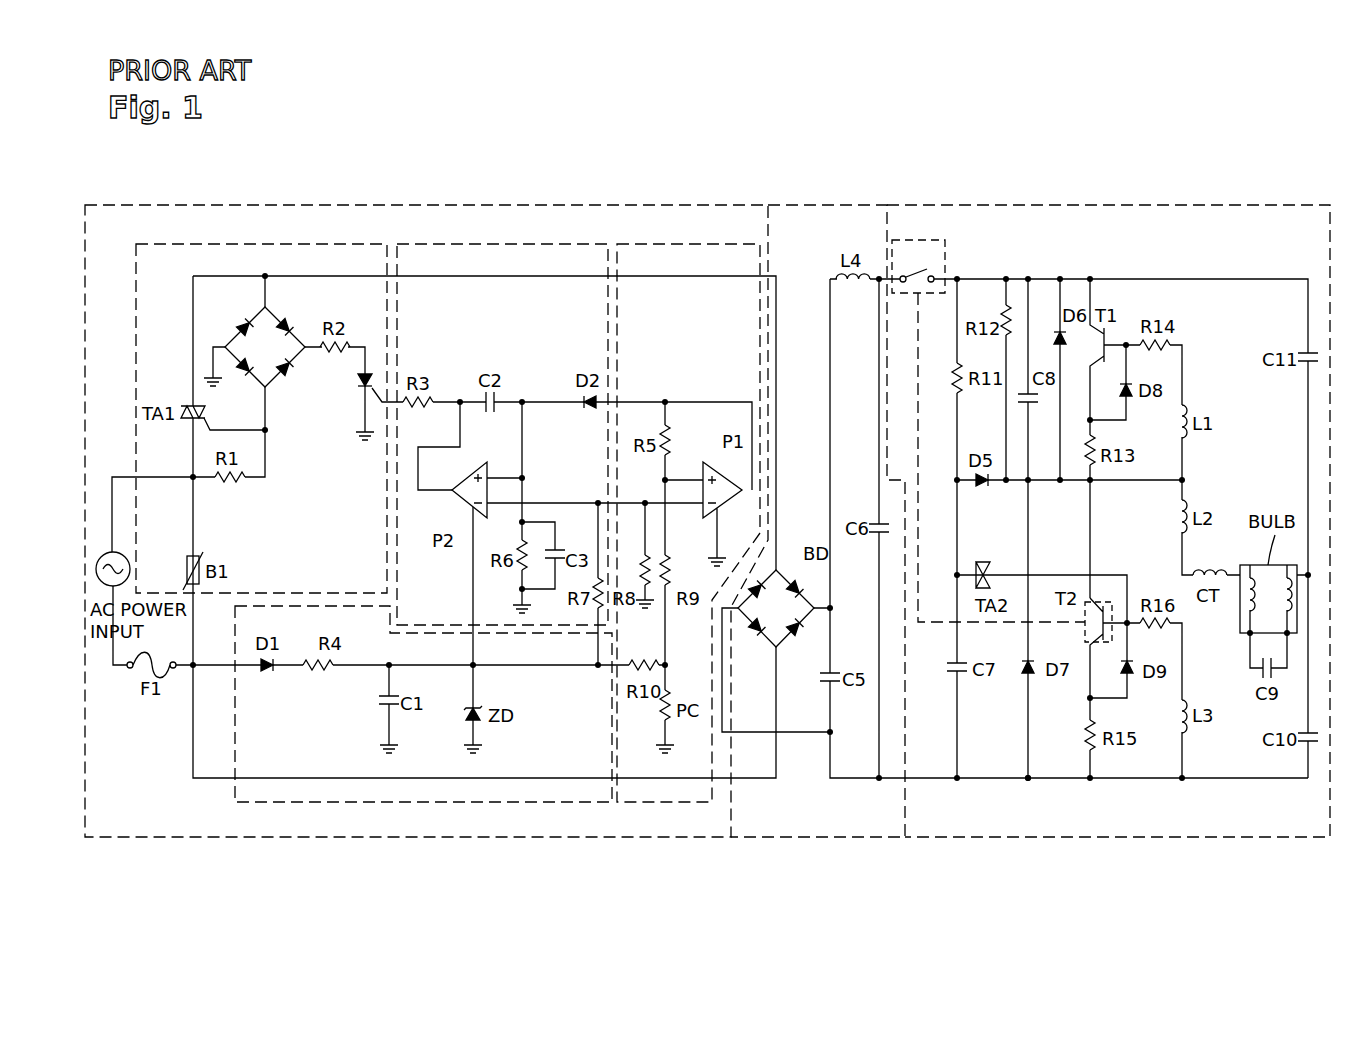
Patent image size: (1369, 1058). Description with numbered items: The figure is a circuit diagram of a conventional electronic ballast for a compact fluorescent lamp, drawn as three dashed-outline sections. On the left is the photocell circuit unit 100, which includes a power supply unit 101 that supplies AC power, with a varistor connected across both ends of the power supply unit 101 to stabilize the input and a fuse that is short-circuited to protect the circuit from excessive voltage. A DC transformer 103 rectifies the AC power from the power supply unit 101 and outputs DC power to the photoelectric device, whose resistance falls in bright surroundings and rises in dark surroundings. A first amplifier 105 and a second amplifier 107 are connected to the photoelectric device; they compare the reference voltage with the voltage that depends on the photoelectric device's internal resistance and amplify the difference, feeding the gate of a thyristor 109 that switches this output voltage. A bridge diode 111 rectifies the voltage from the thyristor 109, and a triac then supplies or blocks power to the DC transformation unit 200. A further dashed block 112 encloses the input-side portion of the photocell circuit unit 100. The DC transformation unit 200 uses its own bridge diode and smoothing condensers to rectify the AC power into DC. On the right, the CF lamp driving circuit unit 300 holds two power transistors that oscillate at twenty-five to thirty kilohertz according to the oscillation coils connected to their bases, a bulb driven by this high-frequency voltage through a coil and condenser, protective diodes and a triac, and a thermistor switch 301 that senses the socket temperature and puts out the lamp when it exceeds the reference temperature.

The photocell circuit unit 100 is at (277, 210).
The power supply unit 101 is at (120, 553).
The DC transformer 103 is at (423, 793).
The first amplifier 105 is at (693, 255).
The second amplifier 107 is at (500, 255).
The thyristor 109 is at (357, 385).
The bridge diode 111 is at (286, 330).
The input section 112 is at (166, 255).
The DC transformation unit 200 is at (822, 215).
The CF lamp driving circuit unit 300 is at (1156, 212).
The thermistor switch 301 is at (948, 257).